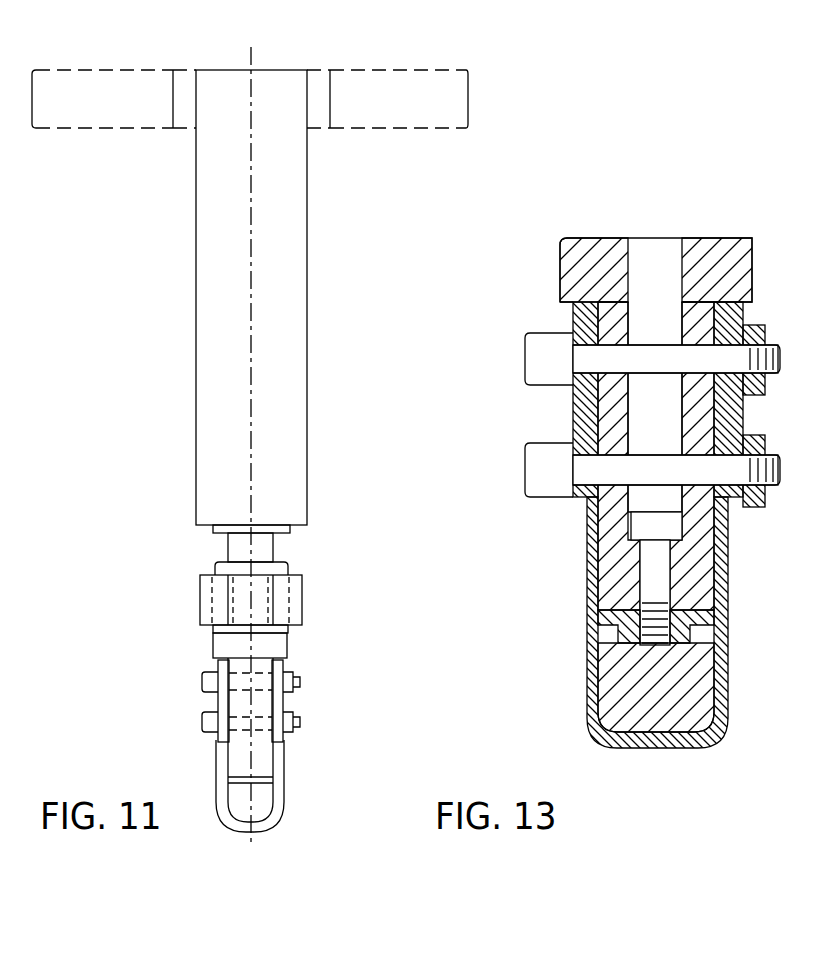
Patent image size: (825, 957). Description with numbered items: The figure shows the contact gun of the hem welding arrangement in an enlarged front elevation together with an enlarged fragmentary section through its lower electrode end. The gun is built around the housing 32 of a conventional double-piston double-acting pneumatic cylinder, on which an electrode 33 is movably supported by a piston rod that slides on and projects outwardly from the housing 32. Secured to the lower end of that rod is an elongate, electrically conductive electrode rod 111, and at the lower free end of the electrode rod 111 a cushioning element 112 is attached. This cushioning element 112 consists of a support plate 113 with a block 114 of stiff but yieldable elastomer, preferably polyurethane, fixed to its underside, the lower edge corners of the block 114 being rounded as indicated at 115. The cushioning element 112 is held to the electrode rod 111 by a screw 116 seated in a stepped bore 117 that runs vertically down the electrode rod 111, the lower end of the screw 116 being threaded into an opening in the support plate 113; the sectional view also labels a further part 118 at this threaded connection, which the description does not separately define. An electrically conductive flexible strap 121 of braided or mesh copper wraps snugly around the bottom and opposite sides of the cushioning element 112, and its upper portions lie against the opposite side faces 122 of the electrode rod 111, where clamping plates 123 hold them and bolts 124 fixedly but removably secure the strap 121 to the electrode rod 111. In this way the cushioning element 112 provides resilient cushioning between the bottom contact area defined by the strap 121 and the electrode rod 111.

In FIG. 11, the housing of fluid pressure cylinder 32 is at (297, 262).
In FIG. 11, the electrode 33 is at (174, 607).
In FIG. 13, the electrode rod 111 is at (578, 270).
In FIG. 13, the cushioning element 112 is at (727, 666).
In FIG. 13, the support plate 113 is at (588, 595).
In FIG. 13, the resilient block 114 is at (687, 712).
In FIG. 13, the rounded corners 115 is at (710, 742).
In FIG. 13, the screw 116 is at (657, 583).
In FIG. 13, the stepped bore 117 is at (682, 262).
In FIG. 13, the retaining nut 118 is at (722, 613).
In FIG. 13, the flexible strap 121 is at (592, 712).
In FIG. 13, the side faces 122 is at (587, 568).
In FIG. 13, the clamping plates 123 is at (587, 407).
In FIG. 13, the bolts 124 is at (693, 463).